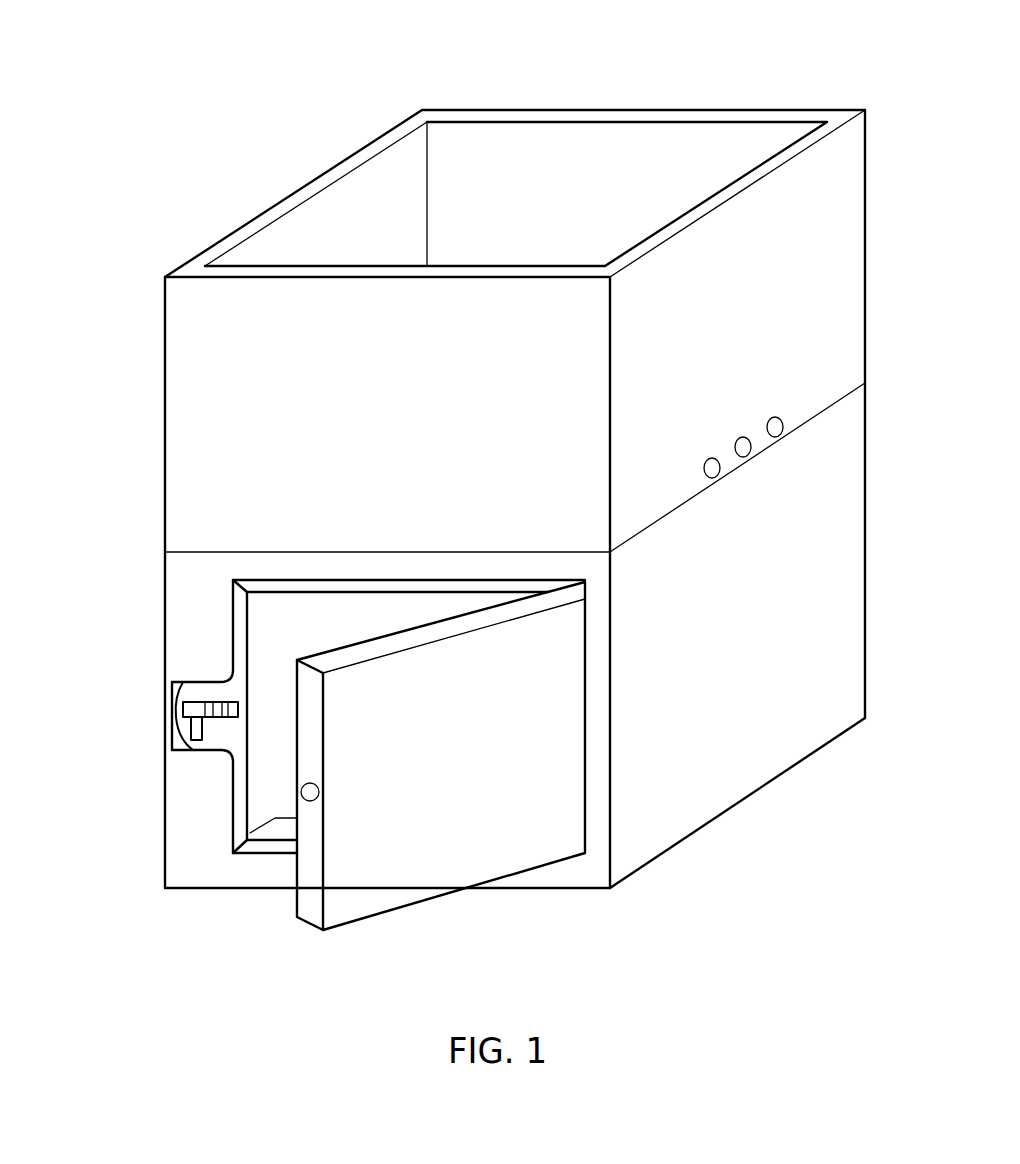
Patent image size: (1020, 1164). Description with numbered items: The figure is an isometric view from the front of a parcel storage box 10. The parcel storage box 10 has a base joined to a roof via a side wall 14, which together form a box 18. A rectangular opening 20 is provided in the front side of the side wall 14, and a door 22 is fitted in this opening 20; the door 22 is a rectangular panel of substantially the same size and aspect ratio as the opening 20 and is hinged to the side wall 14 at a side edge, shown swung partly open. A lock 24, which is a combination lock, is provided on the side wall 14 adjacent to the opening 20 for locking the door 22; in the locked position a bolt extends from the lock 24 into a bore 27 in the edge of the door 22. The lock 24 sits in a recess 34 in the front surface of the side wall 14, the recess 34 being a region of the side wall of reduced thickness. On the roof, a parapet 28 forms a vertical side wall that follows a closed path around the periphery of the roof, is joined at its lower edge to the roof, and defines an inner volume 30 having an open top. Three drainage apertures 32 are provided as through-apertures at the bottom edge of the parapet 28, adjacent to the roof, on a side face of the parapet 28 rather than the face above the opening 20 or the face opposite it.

The parcel storage box 10 is at (459, 489).
The side wall 14 is at (715, 748).
The box 18 is at (319, 734).
The opening 20 is at (300, 642).
The door 22 is at (415, 817).
The lock 24 is at (188, 710).
The bore 27 is at (302, 793).
The parapet 28 is at (197, 398).
The inner volume 30 is at (553, 205).
The drainage apertures 32 is at (782, 437).
The recess 34 is at (207, 692).